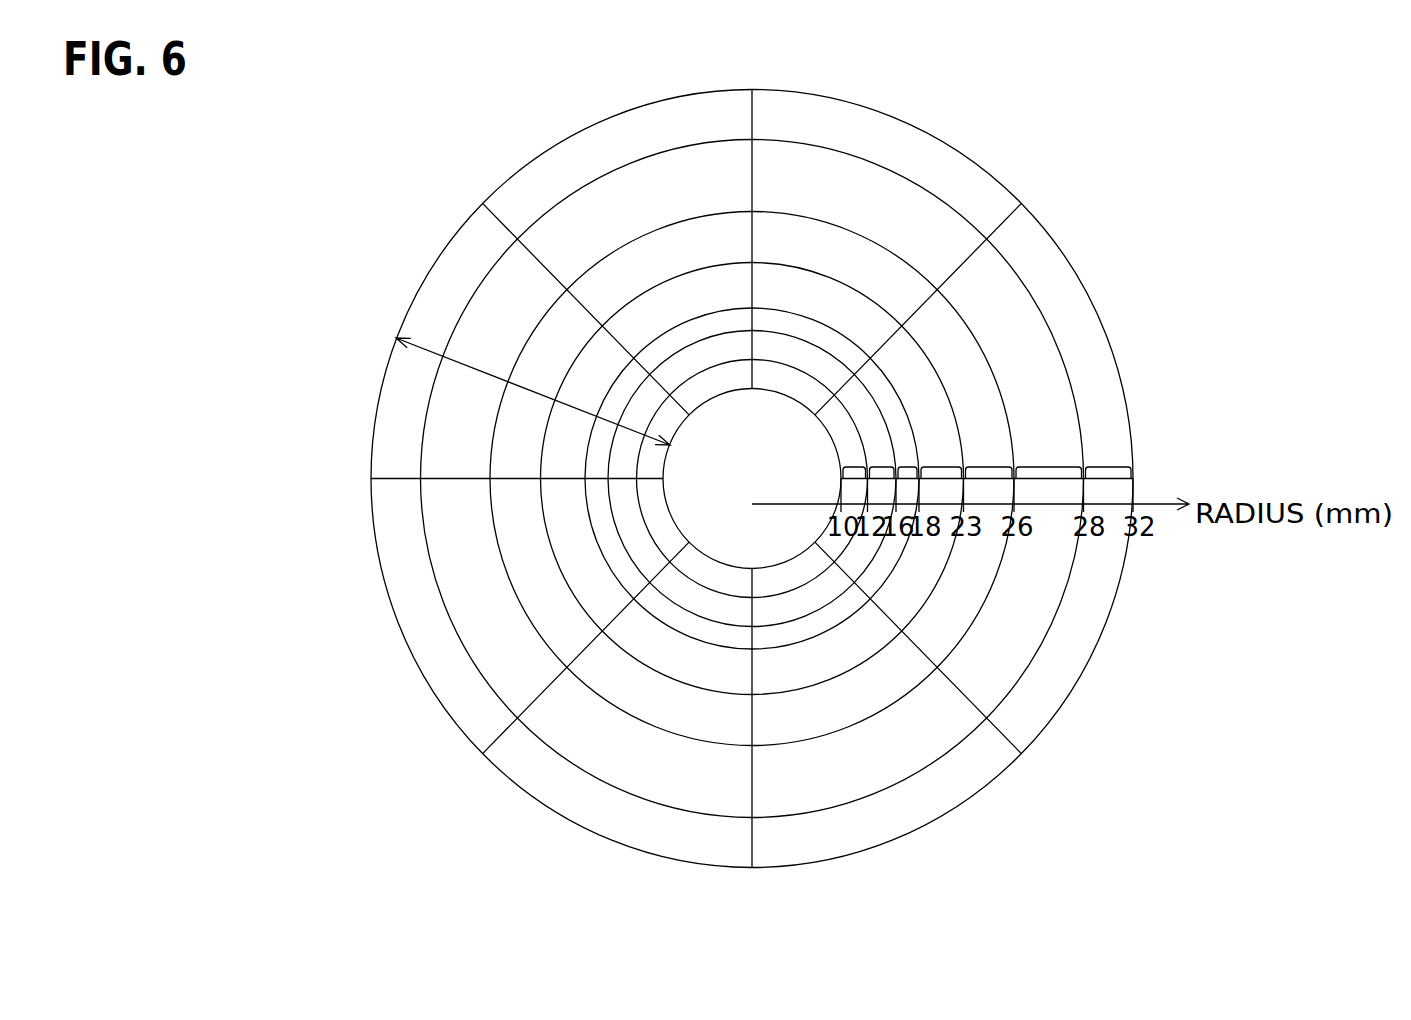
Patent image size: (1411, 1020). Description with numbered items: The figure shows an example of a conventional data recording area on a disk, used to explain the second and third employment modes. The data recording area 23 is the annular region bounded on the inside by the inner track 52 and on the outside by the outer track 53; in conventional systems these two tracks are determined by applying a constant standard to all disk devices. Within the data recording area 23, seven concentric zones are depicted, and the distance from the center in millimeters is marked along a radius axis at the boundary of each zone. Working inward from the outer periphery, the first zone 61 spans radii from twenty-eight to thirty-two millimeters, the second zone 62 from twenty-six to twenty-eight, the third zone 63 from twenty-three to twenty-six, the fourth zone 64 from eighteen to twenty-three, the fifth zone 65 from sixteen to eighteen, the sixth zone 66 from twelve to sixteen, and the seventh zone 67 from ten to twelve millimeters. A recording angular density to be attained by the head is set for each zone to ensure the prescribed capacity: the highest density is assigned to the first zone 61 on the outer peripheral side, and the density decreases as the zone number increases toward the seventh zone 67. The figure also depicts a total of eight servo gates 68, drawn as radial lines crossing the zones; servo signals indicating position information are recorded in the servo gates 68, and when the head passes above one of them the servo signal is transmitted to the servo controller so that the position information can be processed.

The data recording area 23 is at (475, 368).
The inner track 52 is at (718, 392).
The outer track 53 is at (903, 122).
The first zone 61 is at (1108, 467).
The second zone 62 is at (1047, 467).
The third zone 63 is at (988, 467).
The fourth zone 64 is at (943, 467).
The fifth zone 65 is at (910, 467).
The sixth zone 66 is at (883, 467).
The seventh zone 67 is at (857, 467).
The servo gates 68 is at (752, 170).